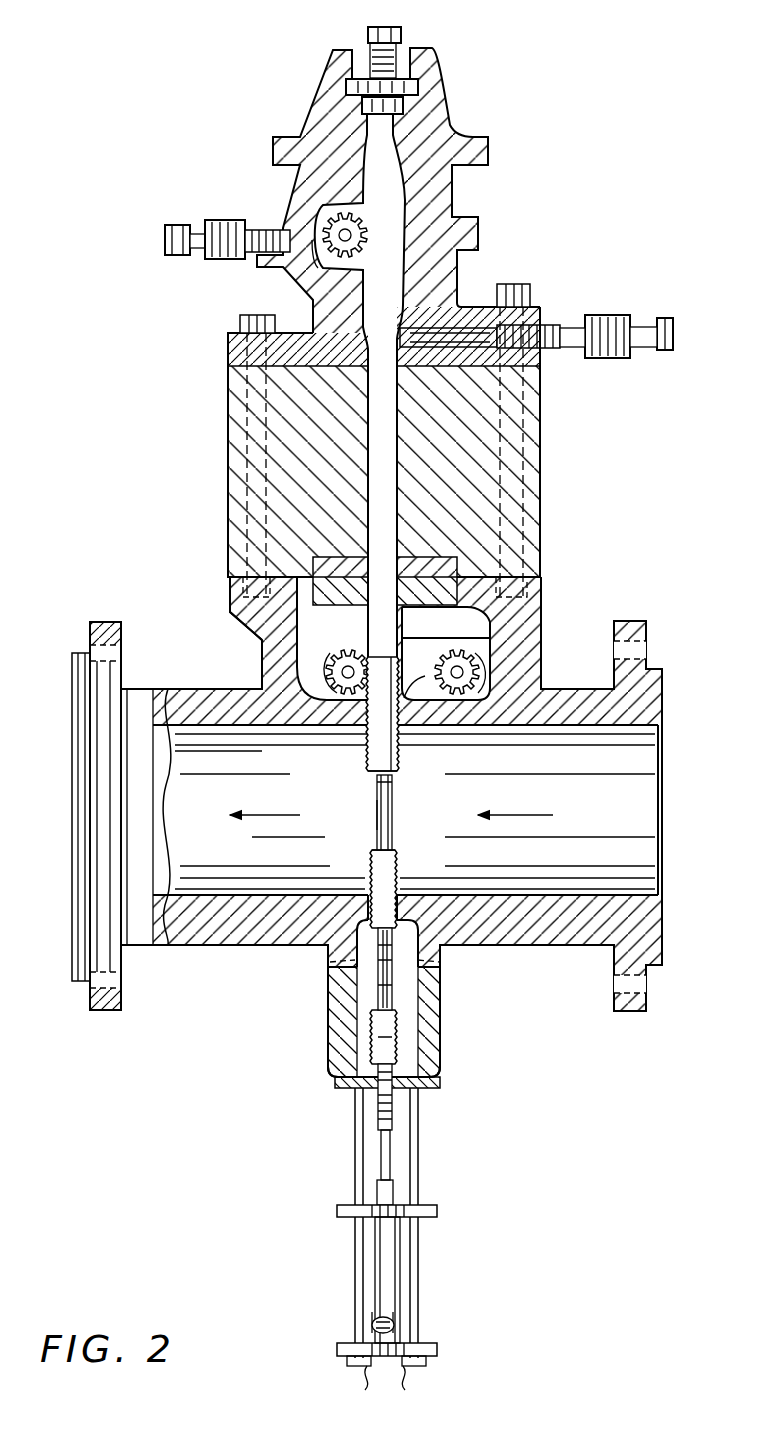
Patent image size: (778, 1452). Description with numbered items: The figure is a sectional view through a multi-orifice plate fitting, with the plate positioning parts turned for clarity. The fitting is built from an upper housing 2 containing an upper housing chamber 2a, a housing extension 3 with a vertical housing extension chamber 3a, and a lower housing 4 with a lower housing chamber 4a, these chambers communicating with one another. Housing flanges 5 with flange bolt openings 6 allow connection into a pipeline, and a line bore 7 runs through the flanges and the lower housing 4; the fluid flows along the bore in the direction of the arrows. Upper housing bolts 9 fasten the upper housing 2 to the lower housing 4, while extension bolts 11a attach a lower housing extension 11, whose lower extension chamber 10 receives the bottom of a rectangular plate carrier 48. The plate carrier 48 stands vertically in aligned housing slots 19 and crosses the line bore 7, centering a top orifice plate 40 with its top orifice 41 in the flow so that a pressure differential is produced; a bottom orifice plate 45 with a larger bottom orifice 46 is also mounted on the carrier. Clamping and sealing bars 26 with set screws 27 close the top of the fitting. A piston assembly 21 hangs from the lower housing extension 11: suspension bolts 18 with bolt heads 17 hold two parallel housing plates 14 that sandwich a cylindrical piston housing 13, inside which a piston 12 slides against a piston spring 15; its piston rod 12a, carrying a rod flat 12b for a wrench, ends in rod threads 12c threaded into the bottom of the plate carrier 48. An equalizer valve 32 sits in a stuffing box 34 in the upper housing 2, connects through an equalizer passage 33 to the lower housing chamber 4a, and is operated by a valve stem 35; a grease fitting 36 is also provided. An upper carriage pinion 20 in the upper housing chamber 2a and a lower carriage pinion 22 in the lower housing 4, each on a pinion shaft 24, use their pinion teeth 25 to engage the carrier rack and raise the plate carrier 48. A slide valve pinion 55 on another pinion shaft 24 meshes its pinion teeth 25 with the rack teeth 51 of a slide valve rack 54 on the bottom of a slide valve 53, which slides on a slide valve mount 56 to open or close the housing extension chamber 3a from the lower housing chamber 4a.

The upper housing 2 is at (303, 176).
The upper housing chamber 2a is at (415, 220).
The housing extension 3 is at (230, 392).
The housing extension chamber 3a is at (386, 498).
The lower housing 4 is at (541, 627).
The lower housing chamber 4a is at (313, 632).
The housing flanges 5 is at (92, 613).
The flange bolt openings 6 is at (113, 652).
The line bore 7 is at (630, 789).
The upper housing bolts 9 is at (258, 315).
The lower extension chamber 10 is at (368, 1013).
The lower housing extension 11 is at (322, 985).
The extension bolts 11a is at (335, 1080).
The piston 12 is at (395, 1327).
The piston rod 12a is at (390, 1190).
The rod flat 12b is at (392, 1152).
The rod threads 12c is at (392, 1068).
The piston housing 13 is at (390, 1262).
The housing plates 14 is at (437, 1208).
The piston spring 15 is at (370, 1318).
The bolt heads 17 is at (385, 1386).
The suspension bolts 18 is at (352, 1135).
The housing slots 19 is at (368, 752).
The upper carriage pinion 20 is at (372, 229).
The piston assembly 21 is at (357, 1221).
The lower carriage pinion 22 is at (325, 688).
The pinion shaft 24 is at (400, 222).
The pinion teeth 25 is at (313, 275).
The clamping and sealing bars 26 is at (405, 104).
The set screws 27 is at (401, 33).
The equalizer valve 32 is at (624, 312).
The equalizer passage 33 is at (387, 348).
The stuffing box 34 is at (222, 258).
The valve stem 35 is at (165, 240).
The grease fitting 36 is at (404, 282).
The top orifice plate 40 is at (394, 833).
The top orifice 41 is at (375, 818).
The bottom orifice plate 45 is at (399, 1005).
The bottom orifice 46 is at (330, 962).
The plate carrier 48 is at (396, 784).
The rack teeth 51 is at (407, 650).
The slide valve 53 is at (451, 633).
The slide valve rack 54 is at (404, 660).
The slide valve pinion 55 is at (480, 660).
The slide valve mount 56 is at (418, 598).